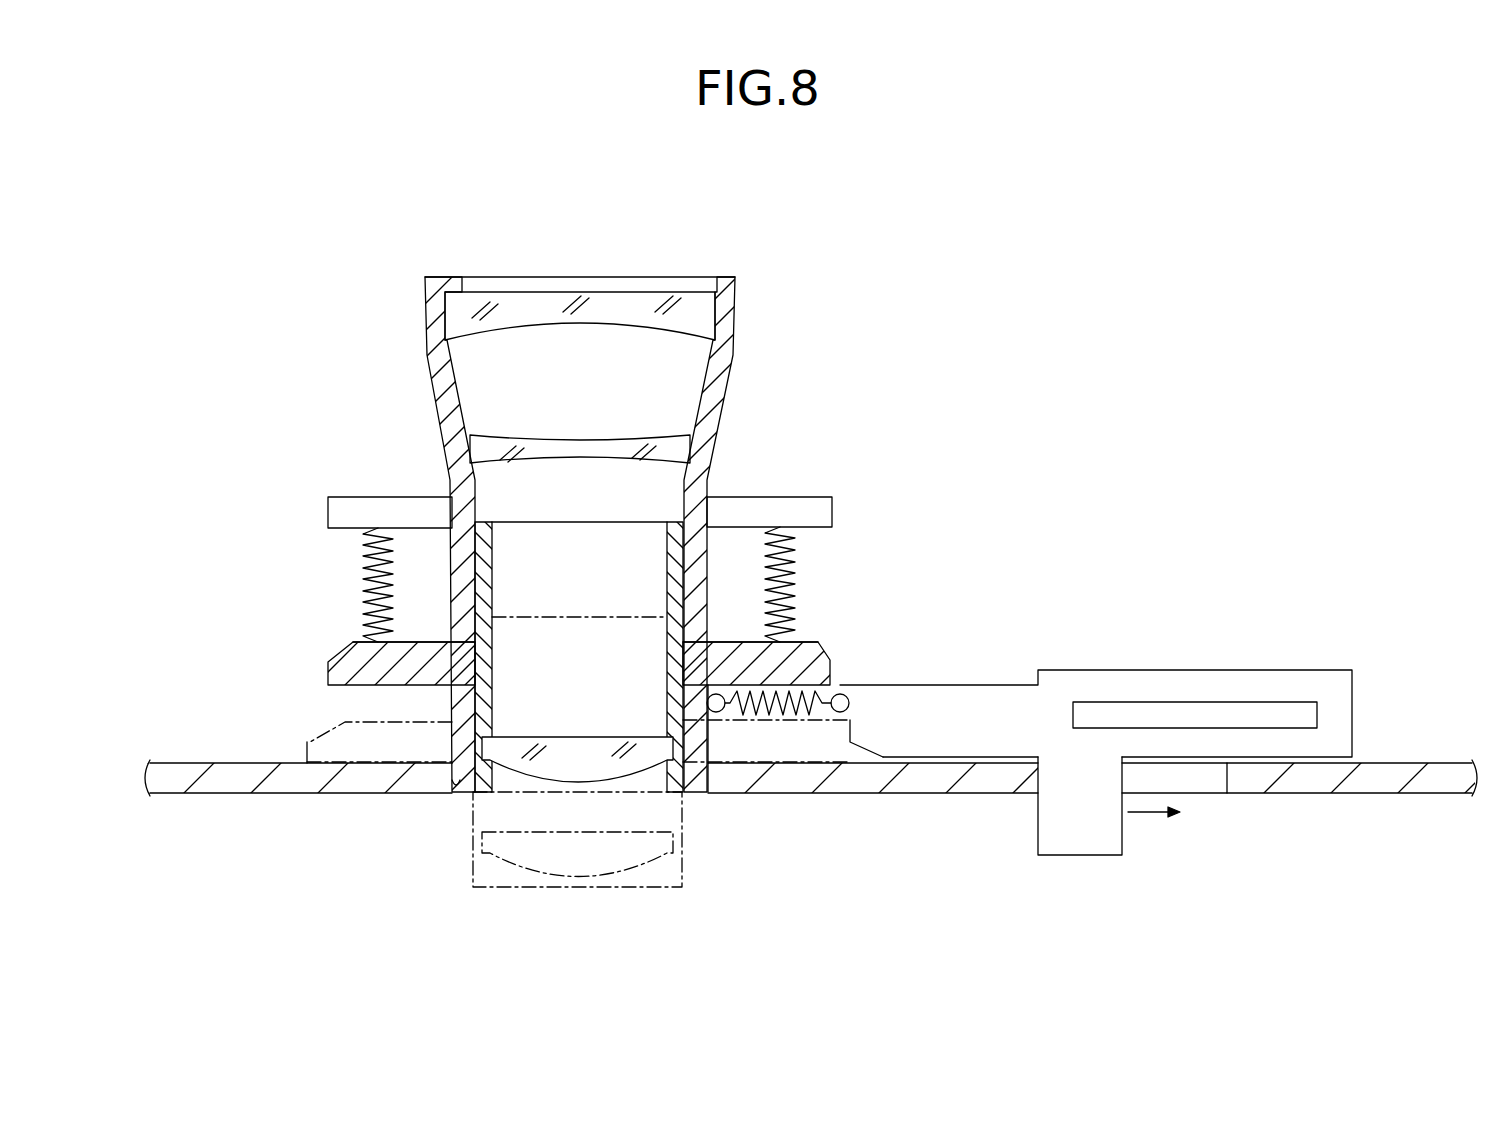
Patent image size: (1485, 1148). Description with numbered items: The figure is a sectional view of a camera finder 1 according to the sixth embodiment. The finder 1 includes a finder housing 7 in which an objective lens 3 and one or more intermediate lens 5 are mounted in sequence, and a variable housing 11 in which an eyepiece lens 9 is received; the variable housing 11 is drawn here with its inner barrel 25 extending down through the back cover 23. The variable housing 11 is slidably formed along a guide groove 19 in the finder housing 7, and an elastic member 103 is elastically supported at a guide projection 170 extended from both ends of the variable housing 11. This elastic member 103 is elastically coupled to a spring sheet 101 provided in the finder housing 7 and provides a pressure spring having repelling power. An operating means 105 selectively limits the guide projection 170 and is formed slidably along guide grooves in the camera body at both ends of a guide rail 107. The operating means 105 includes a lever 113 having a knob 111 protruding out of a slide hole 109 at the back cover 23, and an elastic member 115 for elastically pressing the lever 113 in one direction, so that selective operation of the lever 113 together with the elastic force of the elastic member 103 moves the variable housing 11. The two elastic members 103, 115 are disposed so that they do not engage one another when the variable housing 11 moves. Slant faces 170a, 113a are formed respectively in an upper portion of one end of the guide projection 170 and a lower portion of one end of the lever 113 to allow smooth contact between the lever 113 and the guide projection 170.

The finder 1 is at (383, 298).
The objective lens 3 is at (543, 305).
The intermediate lens 5 is at (487, 446).
The finder housing 7 is at (442, 372).
The eyepiece lens 9 is at (578, 770).
The variable housing 11 is at (445, 768).
The guide groove 19 is at (460, 702).
The back cover 23 is at (1325, 783).
The inner lens barrel 25 is at (466, 790).
The spring sheet 101 is at (345, 516).
The elastic member 103 is at (357, 567).
The operating means 105 is at (970, 638).
The guide rail 107 is at (1193, 712).
The slide hole 109 is at (1200, 782).
The knob 111 is at (1075, 835).
The lever 113 is at (1078, 690).
The slant face 113a is at (862, 742).
The elastic member 115 is at (785, 700).
The guide projection 170 is at (345, 675).
The slant face 170a is at (352, 652).